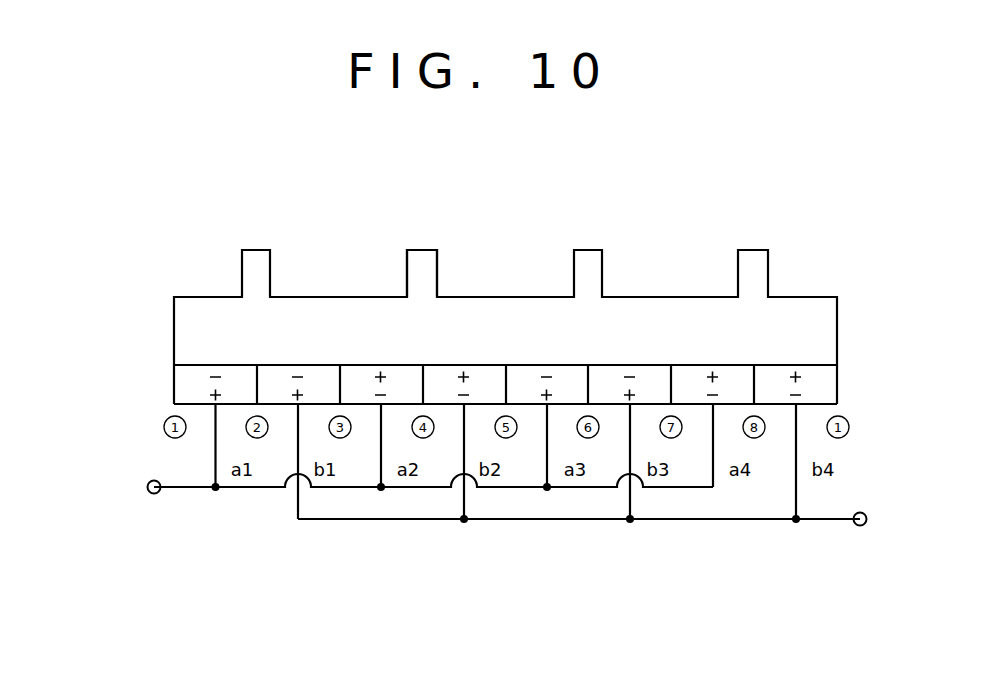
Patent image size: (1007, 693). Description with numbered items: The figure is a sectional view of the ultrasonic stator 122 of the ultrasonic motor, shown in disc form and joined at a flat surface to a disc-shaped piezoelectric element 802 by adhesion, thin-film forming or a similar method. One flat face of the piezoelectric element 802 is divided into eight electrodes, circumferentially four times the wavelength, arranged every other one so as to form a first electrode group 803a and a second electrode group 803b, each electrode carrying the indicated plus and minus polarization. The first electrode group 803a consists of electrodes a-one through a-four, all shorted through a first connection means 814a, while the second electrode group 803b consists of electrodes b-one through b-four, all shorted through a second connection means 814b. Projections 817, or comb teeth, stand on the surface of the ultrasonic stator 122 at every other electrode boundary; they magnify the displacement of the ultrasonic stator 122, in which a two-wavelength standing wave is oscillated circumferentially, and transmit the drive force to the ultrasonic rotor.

The ultrasonic stator 122 is at (807, 297).
The projections (comb teeth) 817 is at (418, 268).
The piezoelectric element 802 is at (173, 388).
The first electrode group 803a is at (350, 363).
The second electrode group 803b is at (448, 394).
The first connection means 814a is at (187, 490).
The second connection means 814b is at (817, 521).